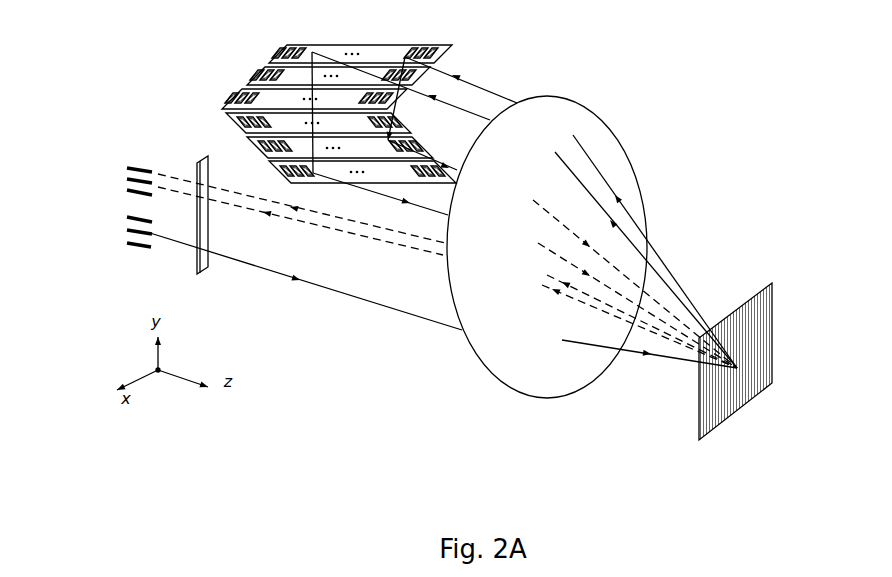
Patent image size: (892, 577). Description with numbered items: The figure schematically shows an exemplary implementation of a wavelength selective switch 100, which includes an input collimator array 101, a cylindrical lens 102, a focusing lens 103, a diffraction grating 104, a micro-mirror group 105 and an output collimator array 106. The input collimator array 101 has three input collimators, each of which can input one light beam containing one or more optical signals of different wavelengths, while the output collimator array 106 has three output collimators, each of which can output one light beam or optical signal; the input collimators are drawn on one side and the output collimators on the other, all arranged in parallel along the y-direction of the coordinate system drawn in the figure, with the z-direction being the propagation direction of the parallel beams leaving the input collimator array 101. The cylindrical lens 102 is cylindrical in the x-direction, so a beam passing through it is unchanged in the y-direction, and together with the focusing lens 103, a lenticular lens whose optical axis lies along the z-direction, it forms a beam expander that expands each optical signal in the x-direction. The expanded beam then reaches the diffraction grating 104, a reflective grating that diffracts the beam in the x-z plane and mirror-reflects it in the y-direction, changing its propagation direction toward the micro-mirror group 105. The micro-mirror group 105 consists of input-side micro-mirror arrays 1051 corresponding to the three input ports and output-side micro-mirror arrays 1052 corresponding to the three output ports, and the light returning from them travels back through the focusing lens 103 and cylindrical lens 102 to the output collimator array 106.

The wavelength selective switch 100 is at (102, 25).
The input collimator array 101 is at (119, 232).
The cylindrical lens 102 is at (216, 230).
The focusing lens 103 is at (547, 268).
The diffraction grating 104 is at (736, 363).
The micro-mirror group 105 is at (324, 96).
The input-side micro-mirror arrays 1051 is at (326, 77).
The output-side micro-mirror arrays 1052 is at (324, 148).
The output collimator array 106 is at (119, 173).